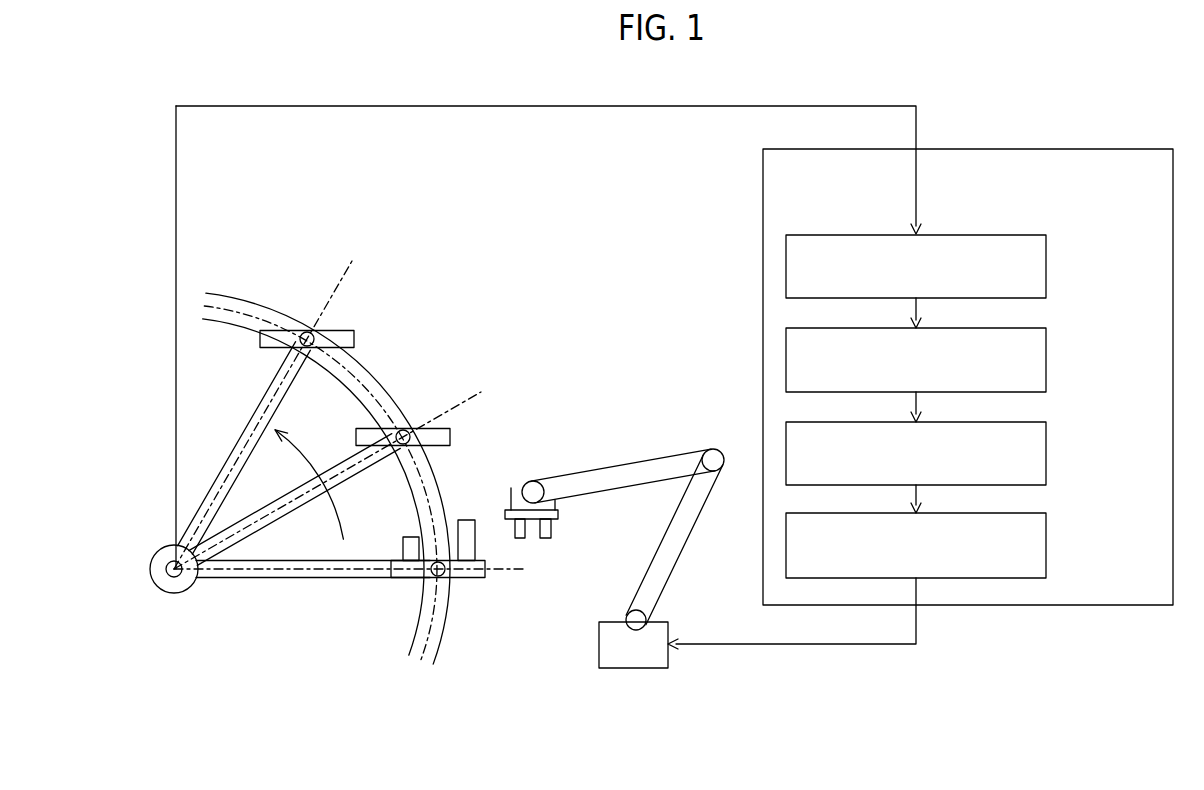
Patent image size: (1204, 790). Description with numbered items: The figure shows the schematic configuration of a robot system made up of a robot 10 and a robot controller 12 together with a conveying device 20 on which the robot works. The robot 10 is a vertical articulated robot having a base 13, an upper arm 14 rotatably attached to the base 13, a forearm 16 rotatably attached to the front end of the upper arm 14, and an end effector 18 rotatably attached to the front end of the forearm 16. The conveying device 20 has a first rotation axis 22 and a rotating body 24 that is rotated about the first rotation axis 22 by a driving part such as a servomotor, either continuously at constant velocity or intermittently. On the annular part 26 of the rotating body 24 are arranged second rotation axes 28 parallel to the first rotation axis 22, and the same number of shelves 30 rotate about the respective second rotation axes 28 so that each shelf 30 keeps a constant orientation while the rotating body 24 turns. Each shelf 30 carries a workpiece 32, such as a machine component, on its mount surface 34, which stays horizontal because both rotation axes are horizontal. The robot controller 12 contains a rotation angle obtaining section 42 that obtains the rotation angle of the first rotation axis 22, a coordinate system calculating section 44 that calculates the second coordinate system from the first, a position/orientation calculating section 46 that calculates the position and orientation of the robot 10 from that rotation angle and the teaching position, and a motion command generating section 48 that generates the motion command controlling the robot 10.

The robot 10 is at (618, 562).
The robot controller 12 is at (1048, 149).
The base 13 is at (599, 648).
The upper arm 14 is at (680, 555).
The forearm 16 is at (623, 464).
The end effector 18 is at (545, 538).
The conveying device 20 is at (338, 488).
The first rotation axis 22 is at (165, 590).
The rotating body 24 is at (313, 579).
The annular part 26 is at (390, 392).
The second rotation axis 28 is at (304, 327).
The shelf 30 is at (354, 339).
The workpiece 32 is at (468, 519).
The mount surface 34 is at (403, 541).
The rotation angle obtaining section 42 is at (1046, 268).
The coordinate system calculating section 44 is at (1046, 360).
The position/orientation calculating section 46 is at (1046, 453).
The motion command generating section 48 is at (1046, 546).